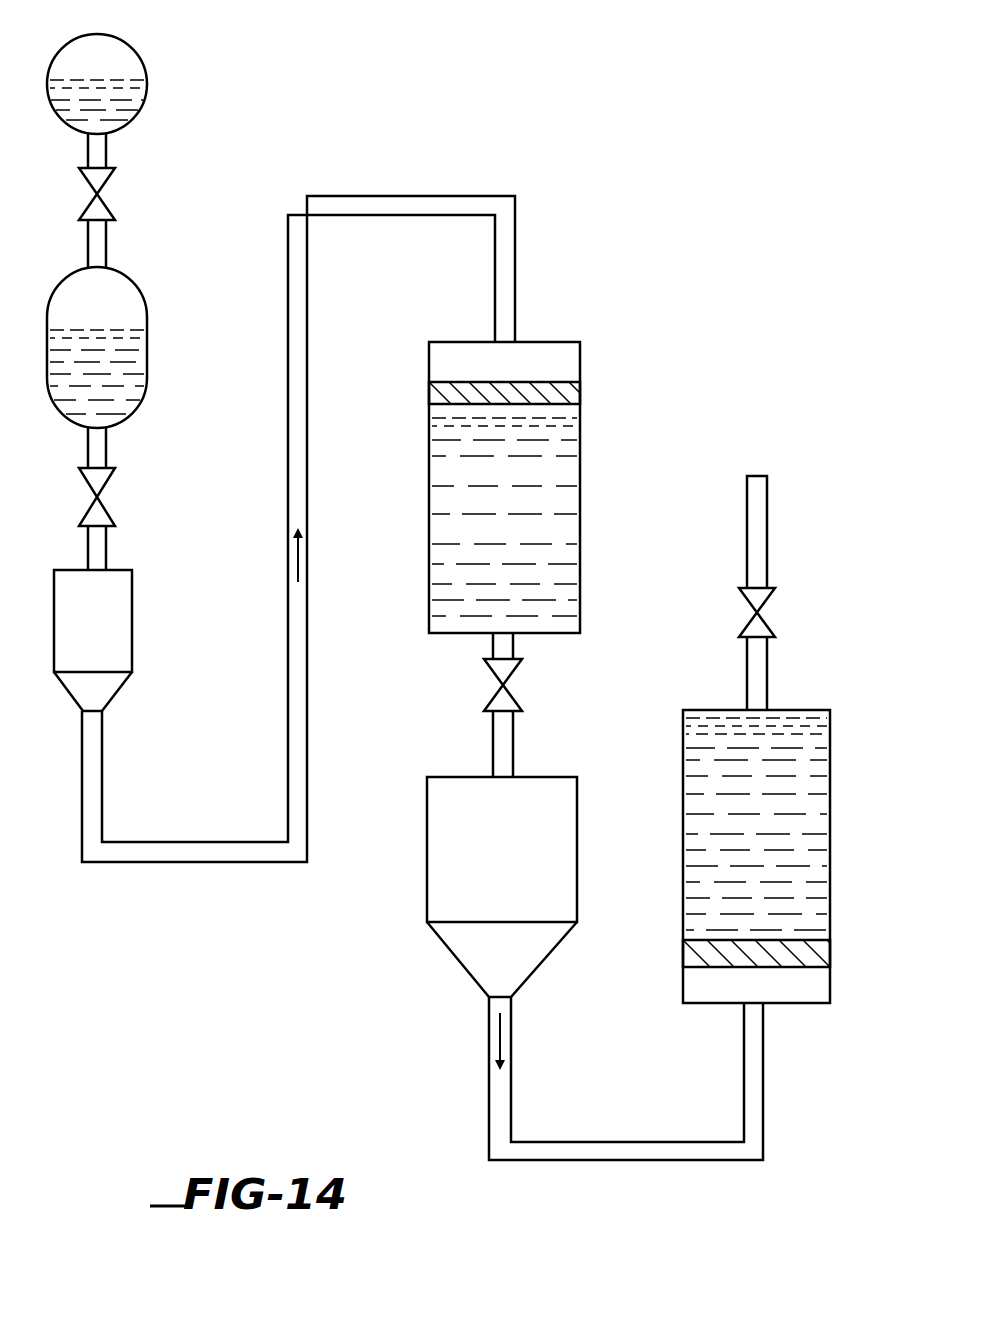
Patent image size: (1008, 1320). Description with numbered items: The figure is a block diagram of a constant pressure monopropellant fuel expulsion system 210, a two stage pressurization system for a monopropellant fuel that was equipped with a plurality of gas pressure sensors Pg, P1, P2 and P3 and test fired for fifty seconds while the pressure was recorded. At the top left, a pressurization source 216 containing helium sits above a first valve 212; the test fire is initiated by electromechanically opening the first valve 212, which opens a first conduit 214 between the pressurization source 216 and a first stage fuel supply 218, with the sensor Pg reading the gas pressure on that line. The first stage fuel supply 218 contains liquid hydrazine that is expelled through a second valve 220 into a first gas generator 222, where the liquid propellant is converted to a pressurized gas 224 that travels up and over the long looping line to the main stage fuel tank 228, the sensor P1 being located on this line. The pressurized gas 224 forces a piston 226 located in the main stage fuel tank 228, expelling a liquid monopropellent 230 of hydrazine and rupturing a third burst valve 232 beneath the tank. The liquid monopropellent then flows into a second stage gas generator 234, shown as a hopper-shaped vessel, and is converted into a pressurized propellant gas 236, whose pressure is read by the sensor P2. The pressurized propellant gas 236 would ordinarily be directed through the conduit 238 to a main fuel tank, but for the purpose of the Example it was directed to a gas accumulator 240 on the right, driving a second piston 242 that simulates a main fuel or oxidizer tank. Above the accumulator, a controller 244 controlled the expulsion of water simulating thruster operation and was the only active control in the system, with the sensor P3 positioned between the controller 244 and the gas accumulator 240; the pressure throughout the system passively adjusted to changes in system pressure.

The constant pressure monopropellant fuel expulsion system 210 is at (413, 84).
The first valve 212 is at (100, 206).
The first conduit 214 is at (100, 148).
The pressurization source 216 is at (135, 90).
The first stage fuel supply 218 is at (132, 342).
The second valve 220 is at (100, 510).
The first gas generator 222 is at (116, 627).
The pressurized gas 224 is at (300, 556).
The piston 226 is at (570, 395).
The main stage fuel tank 228 is at (600, 478).
The liquid monopropellent 230 is at (560, 580).
The third burst valve 232 is at (508, 694).
The second stage gas generator 234 is at (560, 860).
The pressurized propellant gas 236 is at (506, 1037).
The conduit 238 is at (756, 1101).
The gas accumulator 240 is at (818, 862).
The second piston 242 is at (818, 953).
The controller 244 is at (764, 594).
The gas pressure sensor Pg is at (98, 252).
The gas pressure sensor P1 is at (512, 258).
The gas pressure sensor P2 is at (506, 1102).
The gas pressure sensor P3 is at (756, 678).